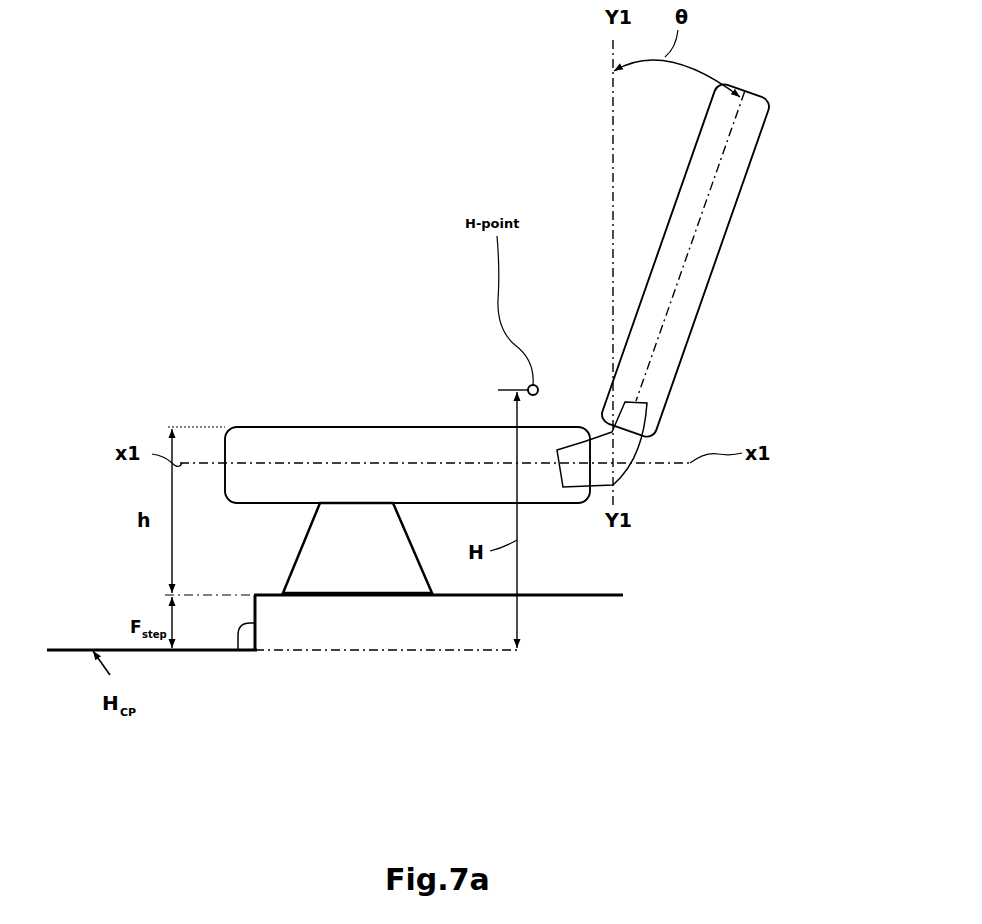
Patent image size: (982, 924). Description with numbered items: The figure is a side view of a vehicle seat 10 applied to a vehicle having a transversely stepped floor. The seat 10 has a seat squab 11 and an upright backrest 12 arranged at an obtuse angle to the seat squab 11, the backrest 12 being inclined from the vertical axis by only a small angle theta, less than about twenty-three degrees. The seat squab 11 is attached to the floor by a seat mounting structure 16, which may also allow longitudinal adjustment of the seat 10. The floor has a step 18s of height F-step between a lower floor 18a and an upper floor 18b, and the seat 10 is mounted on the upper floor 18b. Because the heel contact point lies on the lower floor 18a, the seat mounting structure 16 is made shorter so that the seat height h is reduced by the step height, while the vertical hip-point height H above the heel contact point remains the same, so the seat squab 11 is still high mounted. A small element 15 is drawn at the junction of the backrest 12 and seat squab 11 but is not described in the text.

The front seat 10 is at (492, 426).
The seat squab 11 is at (352, 427).
The backrest 12 is at (743, 187).
The recliner bracket 15 is at (638, 450).
The seat mounting structure 16 is at (290, 572).
The lower floor 18a is at (212, 652).
The step 18s is at (238, 652).
The upper floor 18b is at (575, 597).